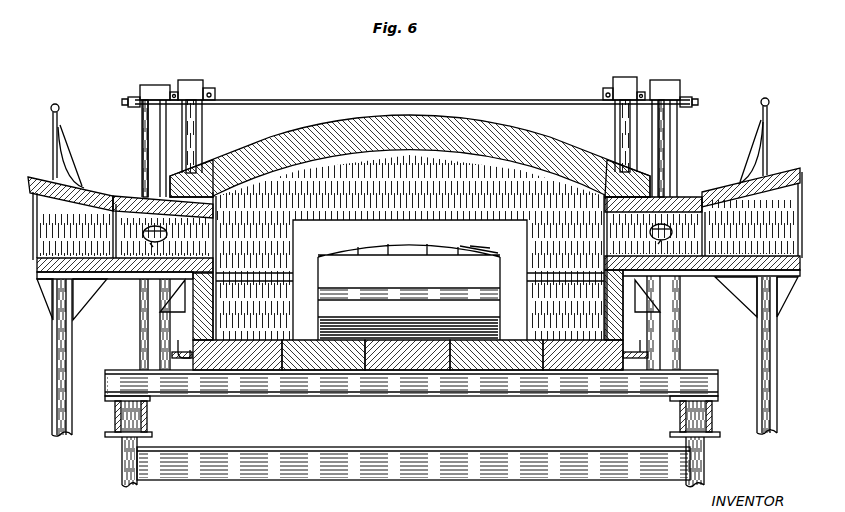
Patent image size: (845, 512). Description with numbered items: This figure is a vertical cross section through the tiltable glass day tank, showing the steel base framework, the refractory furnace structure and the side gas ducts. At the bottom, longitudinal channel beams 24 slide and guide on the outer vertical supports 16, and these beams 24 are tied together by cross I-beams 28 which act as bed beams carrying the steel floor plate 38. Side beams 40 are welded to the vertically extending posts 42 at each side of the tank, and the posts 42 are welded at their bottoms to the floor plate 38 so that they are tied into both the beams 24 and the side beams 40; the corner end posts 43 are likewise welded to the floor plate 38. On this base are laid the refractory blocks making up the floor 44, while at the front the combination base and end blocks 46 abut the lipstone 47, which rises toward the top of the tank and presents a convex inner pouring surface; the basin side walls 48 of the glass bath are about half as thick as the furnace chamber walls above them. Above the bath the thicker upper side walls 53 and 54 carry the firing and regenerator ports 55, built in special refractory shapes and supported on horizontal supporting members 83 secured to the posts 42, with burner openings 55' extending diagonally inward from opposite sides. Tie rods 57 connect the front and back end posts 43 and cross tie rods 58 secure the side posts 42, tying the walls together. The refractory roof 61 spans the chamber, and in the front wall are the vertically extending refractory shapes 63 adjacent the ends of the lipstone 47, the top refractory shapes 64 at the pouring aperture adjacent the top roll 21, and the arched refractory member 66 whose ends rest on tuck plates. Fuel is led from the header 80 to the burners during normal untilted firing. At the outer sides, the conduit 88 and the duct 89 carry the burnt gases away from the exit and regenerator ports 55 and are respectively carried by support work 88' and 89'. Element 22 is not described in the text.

The outer vertical support 16 is at (122, 471).
The top roll 21 is at (491, 258).
The lower frame beam 22 is at (268, 480).
The channel beam 24 is at (137, 410).
The cross I-beam 28 is at (357, 384).
The floor plate 38 is at (701, 370).
The side beam 40 is at (184, 360).
The post 42 is at (156, 86).
The end post 43 is at (191, 80).
The floor refractory blocks 44 is at (283, 340).
The front end combination base and end blocks 46 is at (330, 323).
The lipstone 47 is at (459, 290).
The basin side wall 48 is at (214, 331).
The upper side wall 53 is at (604, 191).
The upper side wall 54 is at (230, 192).
The port 55 is at (407, 240).
The burner opening 55' is at (410, 232).
The tie rod 57 is at (214, 90).
The cross tie rod 58 is at (349, 100).
The refractory roof 61 is at (492, 132).
The vertically extending refractory shape 63 is at (300, 286).
The top refractory shape 64 is at (401, 220).
The arched refractory member 66 is at (377, 251).
The fuel header 80 is at (59, 106).
The horizontal supporting member 83 is at (183, 283).
The conduit 88 is at (752, 169).
The support work 88' is at (756, 373).
The duct 89 is at (69, 180).
The support work 89' is at (80, 357).